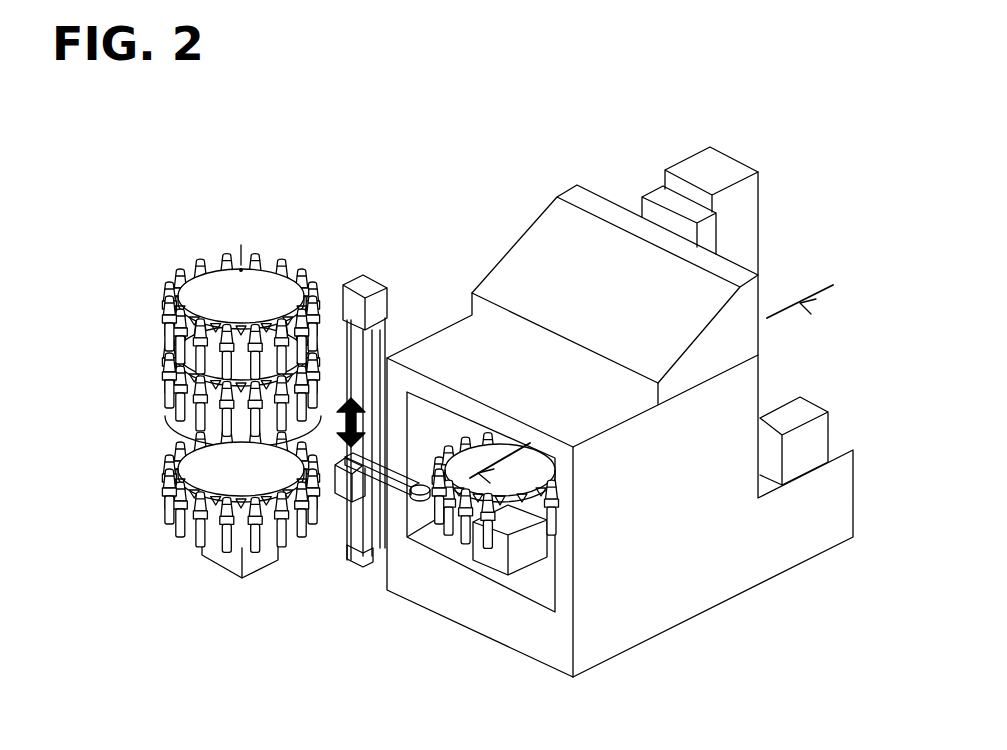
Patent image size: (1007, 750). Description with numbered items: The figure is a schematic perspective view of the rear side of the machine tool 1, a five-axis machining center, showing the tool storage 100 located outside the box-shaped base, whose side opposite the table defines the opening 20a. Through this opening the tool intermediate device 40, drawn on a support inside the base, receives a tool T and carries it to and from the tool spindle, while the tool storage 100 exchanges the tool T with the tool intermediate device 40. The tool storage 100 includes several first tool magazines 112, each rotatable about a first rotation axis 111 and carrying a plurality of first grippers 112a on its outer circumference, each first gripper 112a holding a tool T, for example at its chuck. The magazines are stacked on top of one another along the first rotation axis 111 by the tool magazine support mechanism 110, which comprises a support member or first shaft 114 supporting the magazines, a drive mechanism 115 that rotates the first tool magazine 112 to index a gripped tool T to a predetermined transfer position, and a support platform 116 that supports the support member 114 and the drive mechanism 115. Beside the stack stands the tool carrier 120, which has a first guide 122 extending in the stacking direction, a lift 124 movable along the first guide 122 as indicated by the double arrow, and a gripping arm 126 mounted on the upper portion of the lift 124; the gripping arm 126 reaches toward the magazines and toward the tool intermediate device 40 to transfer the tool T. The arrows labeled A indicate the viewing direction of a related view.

The machine tool 1 is at (742, 144).
The tool storage 100 is at (258, 218).
The tool magazine support mechanism 110 is at (115, 630).
The first rotation axis 111 is at (241, 283).
The first tool magazine 112 is at (197, 290).
The first gripper 112a is at (212, 452).
The support member (first shaft) 114 is at (243, 466).
The drive mechanism 115 is at (251, 525).
The support platform 116 is at (221, 558).
The tool carrier 120 is at (316, 678).
The first guide 122 is at (360, 535).
The lift 124 is at (345, 484).
The gripping arm 126 is at (418, 498).
The opening 20a is at (432, 420).
The tool intermediate device 40 is at (537, 580).
The tool T is at (206, 425).
The direction A is at (811, 314).